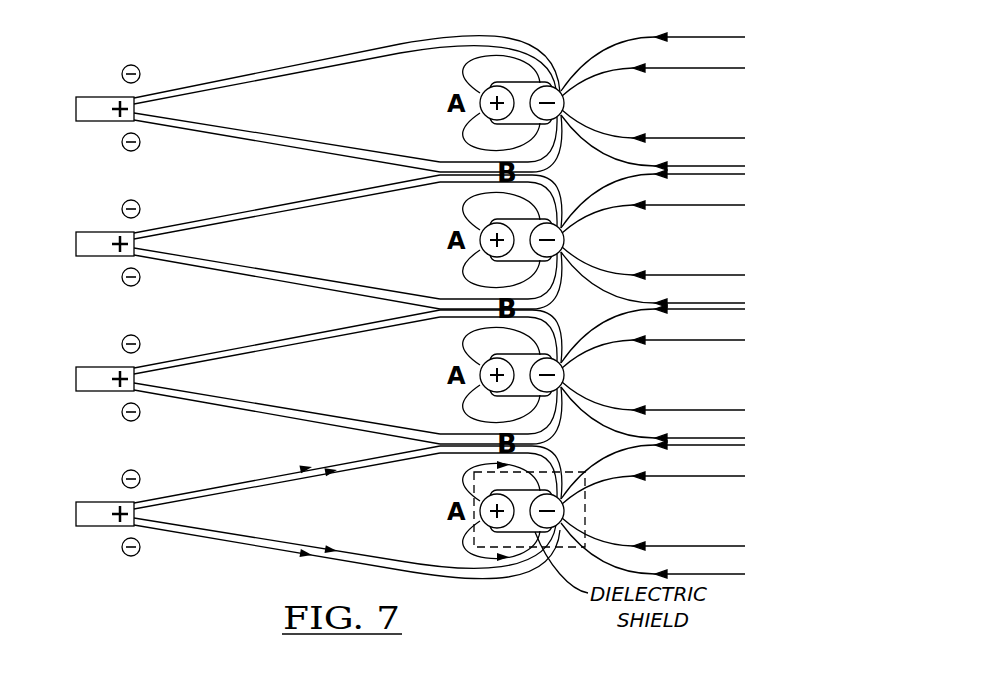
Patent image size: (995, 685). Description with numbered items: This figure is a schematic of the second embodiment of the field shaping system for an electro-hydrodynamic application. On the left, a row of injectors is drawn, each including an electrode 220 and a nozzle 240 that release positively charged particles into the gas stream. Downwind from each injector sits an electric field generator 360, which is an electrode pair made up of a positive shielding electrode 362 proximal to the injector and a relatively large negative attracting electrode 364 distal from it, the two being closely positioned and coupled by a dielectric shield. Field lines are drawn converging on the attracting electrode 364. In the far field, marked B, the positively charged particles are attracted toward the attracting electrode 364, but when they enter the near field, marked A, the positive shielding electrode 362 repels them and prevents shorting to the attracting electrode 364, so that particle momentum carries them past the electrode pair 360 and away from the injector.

The electrode 220 is at (98, 526).
The nozzle 240 is at (135, 556).
The electric field generator 360 is at (526, 549).
The shielding electrode 362 is at (489, 532).
The attracting electrode 364 is at (568, 512).